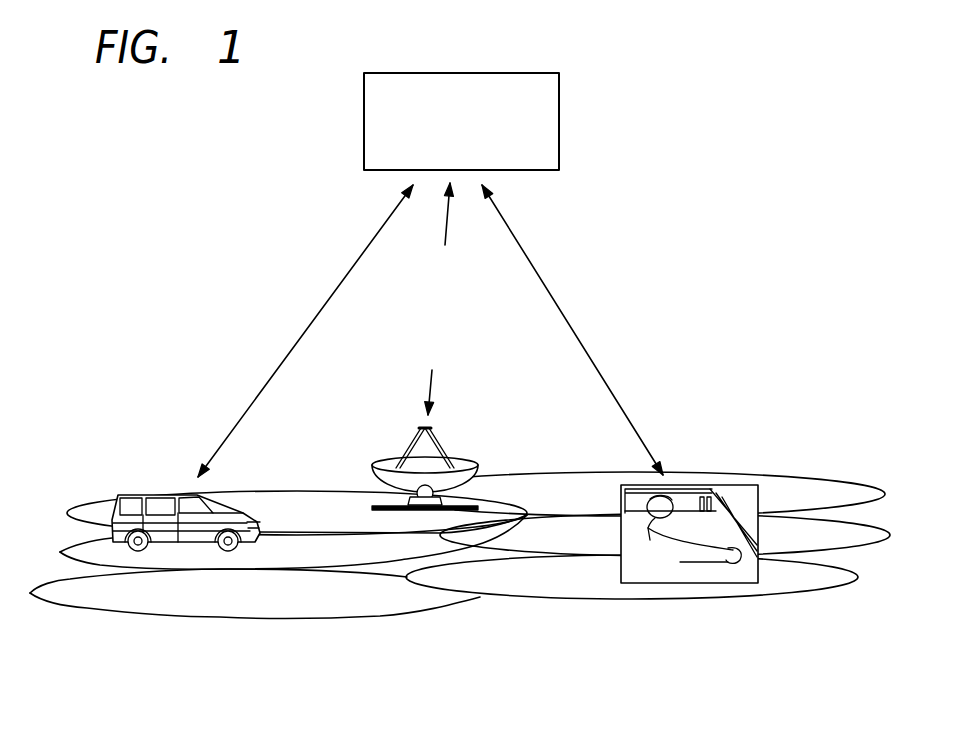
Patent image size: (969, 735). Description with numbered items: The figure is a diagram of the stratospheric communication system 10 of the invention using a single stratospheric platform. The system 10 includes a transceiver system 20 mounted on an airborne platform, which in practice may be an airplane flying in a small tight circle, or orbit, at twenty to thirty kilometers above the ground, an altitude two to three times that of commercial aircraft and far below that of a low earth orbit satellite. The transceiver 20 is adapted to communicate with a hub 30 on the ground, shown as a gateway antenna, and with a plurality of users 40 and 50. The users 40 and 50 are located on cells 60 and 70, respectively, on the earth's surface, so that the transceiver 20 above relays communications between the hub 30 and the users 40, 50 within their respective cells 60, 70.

The stratospheric communication system 10 is at (703, 270).
The transceiver system 20 is at (559, 137).
The hub 30 is at (438, 443).
The user 40 is at (160, 495).
The user 50 is at (740, 500).
The cell 60 is at (82, 550).
The cell 70 is at (781, 601).